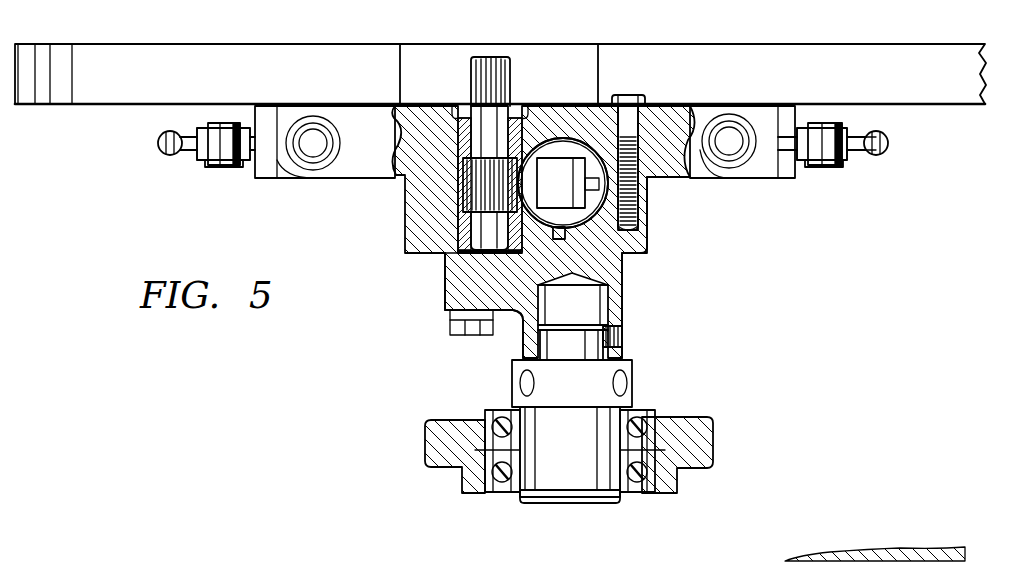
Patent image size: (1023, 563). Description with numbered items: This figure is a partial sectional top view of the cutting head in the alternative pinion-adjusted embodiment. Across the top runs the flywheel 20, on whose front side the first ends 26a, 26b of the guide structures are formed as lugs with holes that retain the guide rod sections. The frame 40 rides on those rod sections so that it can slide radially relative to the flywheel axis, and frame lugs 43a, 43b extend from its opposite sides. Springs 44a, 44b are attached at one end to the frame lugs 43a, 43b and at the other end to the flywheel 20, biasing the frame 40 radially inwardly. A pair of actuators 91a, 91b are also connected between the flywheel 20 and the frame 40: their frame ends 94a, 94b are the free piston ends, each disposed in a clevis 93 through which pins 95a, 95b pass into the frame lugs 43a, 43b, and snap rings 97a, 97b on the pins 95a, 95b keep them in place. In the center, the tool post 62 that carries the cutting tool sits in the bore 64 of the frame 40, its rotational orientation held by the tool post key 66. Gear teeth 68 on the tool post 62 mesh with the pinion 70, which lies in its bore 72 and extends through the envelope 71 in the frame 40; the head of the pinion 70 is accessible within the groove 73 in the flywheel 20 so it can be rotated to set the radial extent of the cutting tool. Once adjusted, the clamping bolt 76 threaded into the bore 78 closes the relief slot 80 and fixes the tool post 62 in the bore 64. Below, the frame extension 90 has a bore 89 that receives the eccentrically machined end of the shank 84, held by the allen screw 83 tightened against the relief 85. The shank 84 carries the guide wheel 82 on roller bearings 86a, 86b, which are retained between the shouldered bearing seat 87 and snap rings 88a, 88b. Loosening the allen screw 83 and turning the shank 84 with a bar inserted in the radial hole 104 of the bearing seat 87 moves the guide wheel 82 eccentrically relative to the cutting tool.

The flywheel 20 is at (926, 85).
The first end of guide structure 26a is at (713, 107).
The first end of guide structure 26b is at (337, 108).
The frame 40 is at (410, 207).
The frame lug 43a is at (890, 142).
The frame lug 43b is at (187, 132).
The spring 44a is at (893, 157).
The spring 44b is at (163, 153).
The tool post 62 is at (575, 152).
The bore 64 is at (623, 258).
The tool post key 66 is at (560, 227).
The gear teeth 68 is at (527, 237).
The pinion 70 is at (508, 84).
The envelope 71 is at (455, 113).
The bore 72 is at (543, 104).
The groove 73 is at (403, 62).
The clamping bolt 76 is at (638, 102).
The bore 78 is at (642, 183).
The relief slot 80 is at (645, 203).
The guide wheel 82 is at (718, 442).
The allen screw 83 is at (623, 338).
The shank 84 is at (573, 507).
The relief 85 is at (538, 340).
The roller bearing 86a is at (507, 485).
The roller bearing 86b is at (653, 432).
The bearing seat 87 is at (637, 407).
The snap ring 88a is at (475, 450).
The snap ring 88b is at (633, 495).
The bore 89 is at (609, 303).
The frame extension 90 is at (450, 292).
The actuator 91a is at (854, 170).
The actuator 91b is at (186, 166).
The clevis 93 is at (852, 137).
The frame end 94a is at (813, 168).
The frame end 94b is at (230, 167).
The pin 95a is at (833, 123).
The pin 95b is at (230, 123).
The snap ring 97a is at (810, 127).
The snap ring 97b is at (208, 125).
The radial hole 104 is at (513, 382).